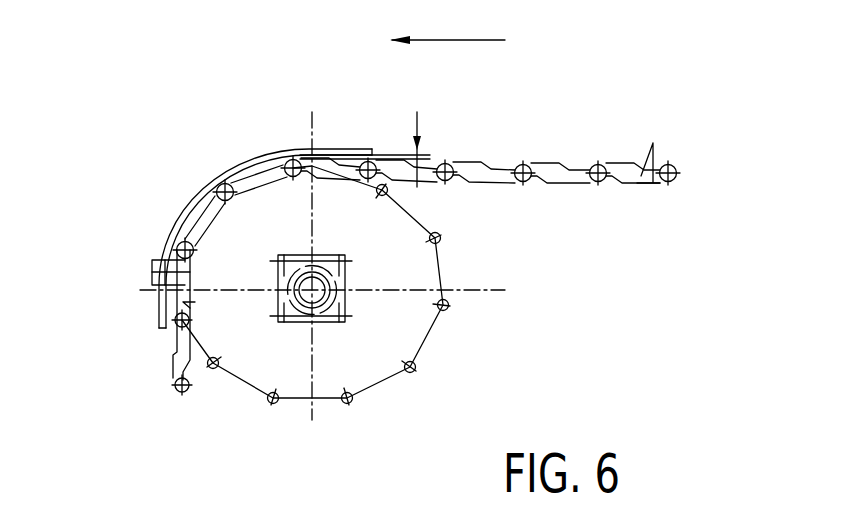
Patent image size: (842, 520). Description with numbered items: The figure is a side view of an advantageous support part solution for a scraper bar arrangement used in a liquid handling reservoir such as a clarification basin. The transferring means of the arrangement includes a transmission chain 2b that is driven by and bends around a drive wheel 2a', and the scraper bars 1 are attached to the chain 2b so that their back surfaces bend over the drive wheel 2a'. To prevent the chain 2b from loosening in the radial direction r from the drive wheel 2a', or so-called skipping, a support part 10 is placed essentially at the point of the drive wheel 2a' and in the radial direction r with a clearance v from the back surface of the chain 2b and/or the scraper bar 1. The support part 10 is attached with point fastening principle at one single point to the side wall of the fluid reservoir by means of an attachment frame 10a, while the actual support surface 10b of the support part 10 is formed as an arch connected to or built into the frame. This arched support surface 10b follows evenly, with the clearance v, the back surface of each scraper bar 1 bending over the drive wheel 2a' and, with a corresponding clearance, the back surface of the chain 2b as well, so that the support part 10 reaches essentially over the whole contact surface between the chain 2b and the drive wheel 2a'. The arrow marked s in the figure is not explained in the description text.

The scraper bar 1 is at (640, 186).
The drive wheel 2a' is at (372, 285).
The transmission chain 2b is at (538, 167).
The support part 10 is at (226, 150).
The attachment frame 10a is at (146, 240).
The support surface 10b is at (294, 238).
The radial direction r is at (265, 243).
The direction of travel s is at (458, 40).
The clearance v is at (415, 122).